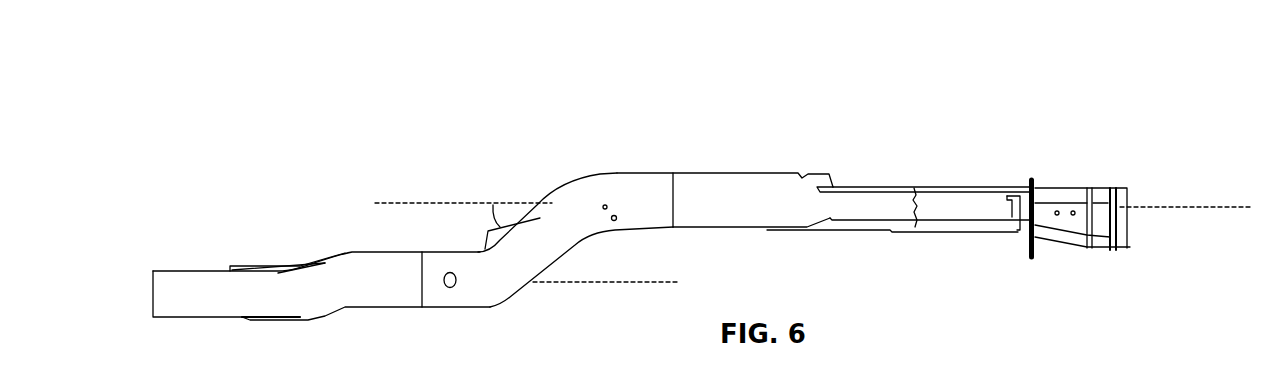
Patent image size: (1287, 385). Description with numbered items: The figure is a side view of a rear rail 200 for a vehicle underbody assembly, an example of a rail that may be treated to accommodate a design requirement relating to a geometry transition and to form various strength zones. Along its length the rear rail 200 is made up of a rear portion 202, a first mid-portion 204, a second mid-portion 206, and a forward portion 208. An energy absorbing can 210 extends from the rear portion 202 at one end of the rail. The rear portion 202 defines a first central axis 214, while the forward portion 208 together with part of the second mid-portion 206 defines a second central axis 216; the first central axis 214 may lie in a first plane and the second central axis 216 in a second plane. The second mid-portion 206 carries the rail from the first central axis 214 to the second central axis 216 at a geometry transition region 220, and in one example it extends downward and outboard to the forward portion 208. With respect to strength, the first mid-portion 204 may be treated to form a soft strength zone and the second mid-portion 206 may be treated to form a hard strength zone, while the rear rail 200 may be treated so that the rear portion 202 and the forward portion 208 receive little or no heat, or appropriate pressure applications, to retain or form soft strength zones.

The rear rail 200 is at (1013, 58).
The rear portion 202 is at (975, 187).
The first mid-portion 204 is at (758, 173).
The second mid-portion 206 is at (599, 211).
The forward portion 208 is at (358, 252).
The energy absorbing can 210 is at (1063, 197).
The first central axis 214 is at (417, 203).
The second central axis 216 is at (603, 283).
The geometry transition region 220 is at (605, 248).